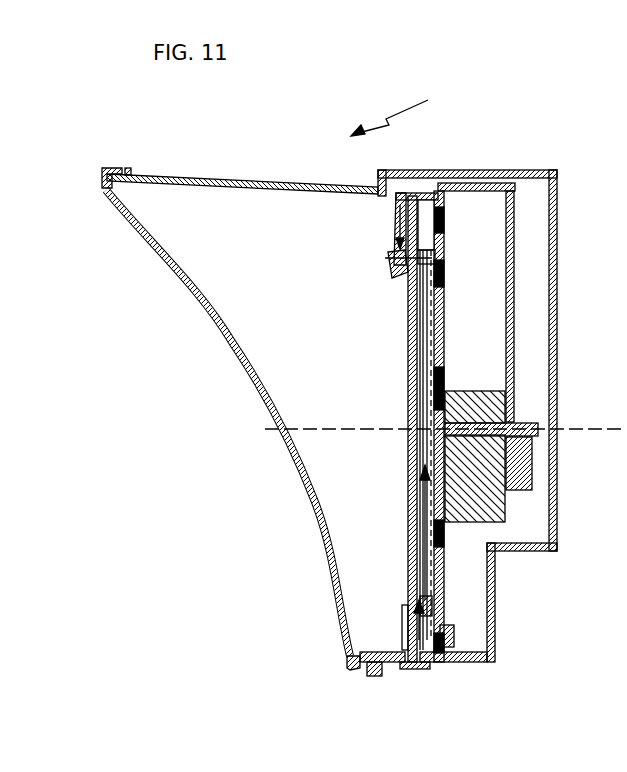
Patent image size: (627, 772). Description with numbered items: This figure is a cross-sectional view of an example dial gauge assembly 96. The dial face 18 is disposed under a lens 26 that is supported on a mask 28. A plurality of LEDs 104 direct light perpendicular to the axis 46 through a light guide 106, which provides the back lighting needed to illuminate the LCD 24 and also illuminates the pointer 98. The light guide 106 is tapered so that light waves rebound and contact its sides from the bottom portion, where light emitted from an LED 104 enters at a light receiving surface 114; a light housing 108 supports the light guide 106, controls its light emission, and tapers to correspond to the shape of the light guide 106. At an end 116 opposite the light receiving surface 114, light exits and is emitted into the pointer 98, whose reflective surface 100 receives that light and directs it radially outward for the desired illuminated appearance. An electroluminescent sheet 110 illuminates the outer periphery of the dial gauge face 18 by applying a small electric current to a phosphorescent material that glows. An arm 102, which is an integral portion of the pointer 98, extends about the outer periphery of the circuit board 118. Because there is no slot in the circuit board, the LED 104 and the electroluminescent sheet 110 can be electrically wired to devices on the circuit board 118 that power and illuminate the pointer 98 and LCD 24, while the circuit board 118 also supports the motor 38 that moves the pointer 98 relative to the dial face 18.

The lens 26 is at (98, 171).
The mask 28 is at (277, 186).
The dial gauge assembly 96 is at (389, 112).
The electroluminescent sheet 110 is at (416, 205).
The light housing 108 is at (442, 185).
The pointer 98 is at (395, 222).
The end 116 is at (441, 262).
The reflective surface 100 is at (398, 278).
The arm 102 is at (520, 290).
The LCD 24 is at (409, 386).
The axis 46 is at (575, 422).
The motor 38 is at (490, 510).
The circuit board 118 is at (447, 547).
The light guide 106 is at (443, 583).
The dial face 18 is at (414, 622).
The light receiving surface 114 is at (414, 620).
The LEDs 104 is at (445, 632).